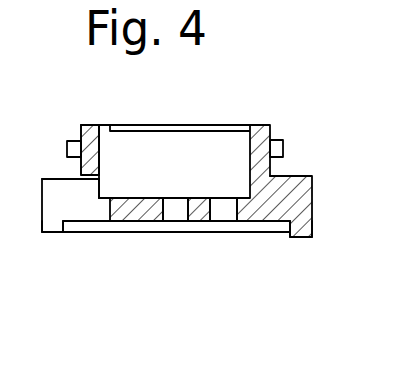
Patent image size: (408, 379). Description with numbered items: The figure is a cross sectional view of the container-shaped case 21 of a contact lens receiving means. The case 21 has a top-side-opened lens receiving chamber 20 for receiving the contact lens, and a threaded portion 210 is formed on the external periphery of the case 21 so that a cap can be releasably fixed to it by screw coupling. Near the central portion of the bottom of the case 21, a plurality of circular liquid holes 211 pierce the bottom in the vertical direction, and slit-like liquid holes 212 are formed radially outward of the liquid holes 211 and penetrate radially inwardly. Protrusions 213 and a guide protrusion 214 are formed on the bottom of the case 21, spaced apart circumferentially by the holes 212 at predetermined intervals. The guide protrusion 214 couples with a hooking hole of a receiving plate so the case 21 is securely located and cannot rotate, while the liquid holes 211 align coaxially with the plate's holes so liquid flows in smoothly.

The lens receiving chamber 20 is at (243, 162).
The case 21 is at (202, 215).
The threaded portion 210 is at (66, 150).
The circular liquid holes 211 is at (168, 216).
The slit-like liquid holes 212 is at (53, 203).
The protrusions 213 is at (50, 224).
The guide protrusion 214 is at (302, 238).